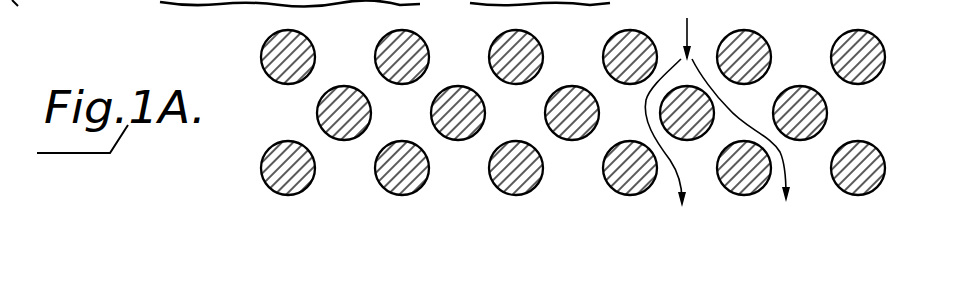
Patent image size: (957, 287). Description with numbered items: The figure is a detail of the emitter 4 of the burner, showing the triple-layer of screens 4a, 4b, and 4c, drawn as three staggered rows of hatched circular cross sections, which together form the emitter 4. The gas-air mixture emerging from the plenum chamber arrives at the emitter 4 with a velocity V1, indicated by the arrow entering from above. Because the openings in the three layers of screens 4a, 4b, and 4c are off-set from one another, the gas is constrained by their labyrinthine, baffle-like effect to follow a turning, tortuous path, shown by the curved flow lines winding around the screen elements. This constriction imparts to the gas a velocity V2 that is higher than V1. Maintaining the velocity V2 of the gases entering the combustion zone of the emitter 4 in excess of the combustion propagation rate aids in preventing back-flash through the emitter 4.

The emitter 4 is at (248, 212).
The first screen 4a is at (882, 72).
The second screen 4b is at (826, 121).
The third screen 4c is at (883, 152).
The velocity of gas-air mixture emerging from plenum chamber V1 is at (678, 112).
The increased velocity of gas entering combustion zone V2 is at (752, 130).